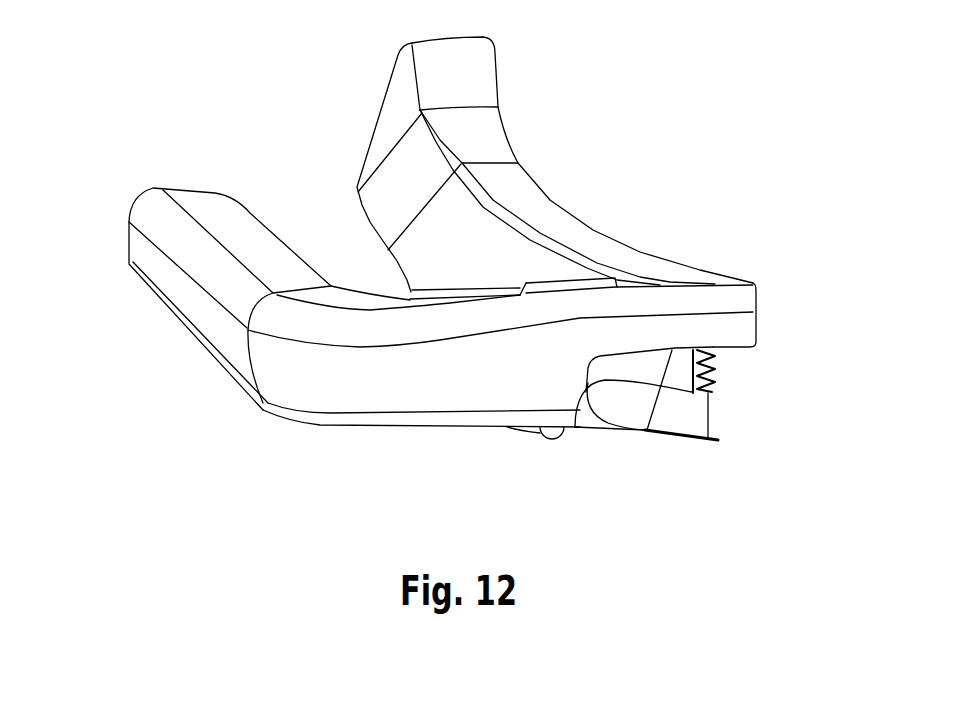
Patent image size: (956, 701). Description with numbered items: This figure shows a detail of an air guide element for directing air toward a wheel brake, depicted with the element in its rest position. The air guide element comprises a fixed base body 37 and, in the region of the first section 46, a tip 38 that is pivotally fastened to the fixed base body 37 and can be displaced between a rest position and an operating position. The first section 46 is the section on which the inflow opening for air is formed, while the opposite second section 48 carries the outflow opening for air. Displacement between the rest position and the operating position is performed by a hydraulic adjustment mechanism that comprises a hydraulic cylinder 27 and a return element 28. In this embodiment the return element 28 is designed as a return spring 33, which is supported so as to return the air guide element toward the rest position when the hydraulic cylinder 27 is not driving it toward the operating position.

The hydraulic cylinder 27 is at (543, 447).
The return element 28 is at (725, 368).
The return spring 33 is at (717, 388).
The fixed base body 37 is at (345, 393).
The tip 38 is at (660, 407).
The first section 46 is at (757, 275).
The second section 48 is at (131, 298).